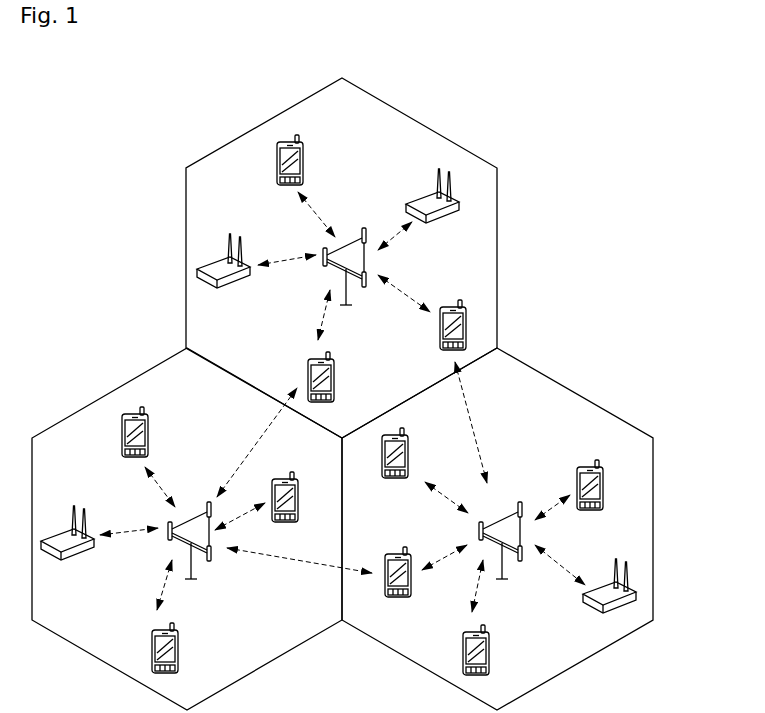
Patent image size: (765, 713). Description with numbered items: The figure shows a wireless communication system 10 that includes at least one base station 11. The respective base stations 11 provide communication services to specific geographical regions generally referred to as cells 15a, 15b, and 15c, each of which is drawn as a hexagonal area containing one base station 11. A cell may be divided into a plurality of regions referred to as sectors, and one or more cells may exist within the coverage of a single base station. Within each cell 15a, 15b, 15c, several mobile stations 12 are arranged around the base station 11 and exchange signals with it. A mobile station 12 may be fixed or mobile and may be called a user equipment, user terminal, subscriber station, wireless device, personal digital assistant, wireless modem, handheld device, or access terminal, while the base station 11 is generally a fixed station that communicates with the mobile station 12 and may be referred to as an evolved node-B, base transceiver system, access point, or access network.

The wireless communication system 10 is at (568, 171).
The base station 11 is at (354, 243).
The mobile station 12 is at (338, 405).
The cell 15a is at (497, 250).
The cell 15b is at (598, 402).
The cell 15c is at (87, 402).